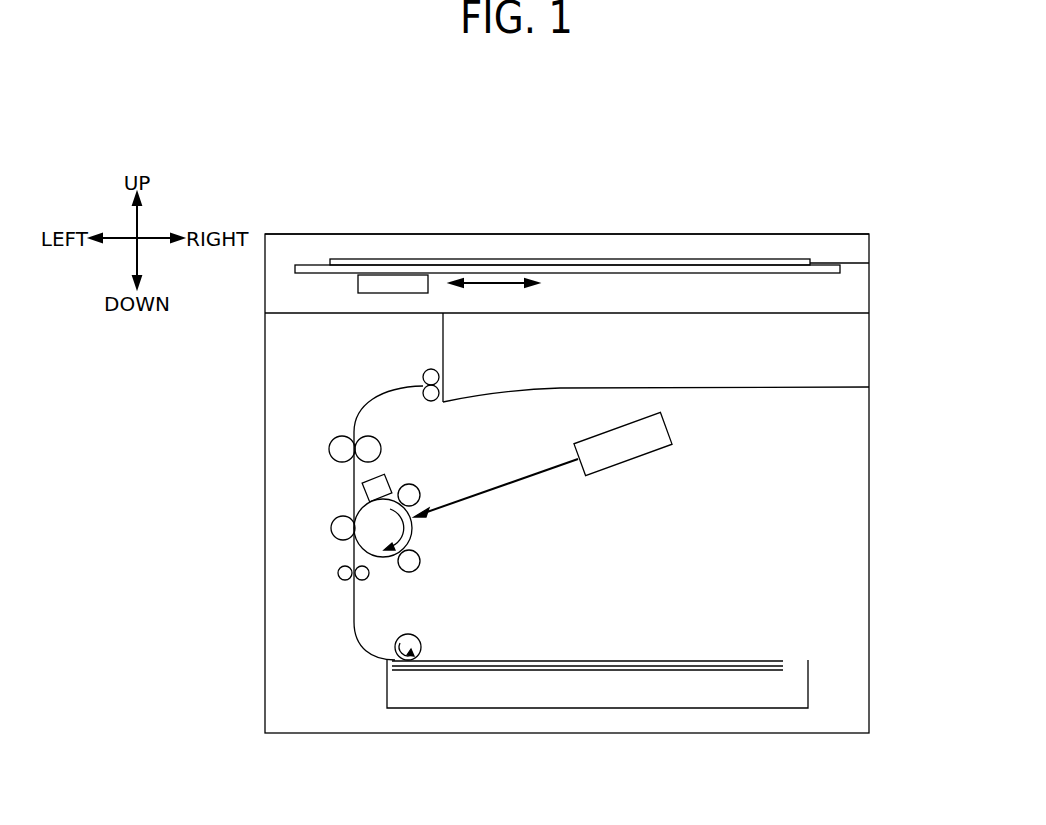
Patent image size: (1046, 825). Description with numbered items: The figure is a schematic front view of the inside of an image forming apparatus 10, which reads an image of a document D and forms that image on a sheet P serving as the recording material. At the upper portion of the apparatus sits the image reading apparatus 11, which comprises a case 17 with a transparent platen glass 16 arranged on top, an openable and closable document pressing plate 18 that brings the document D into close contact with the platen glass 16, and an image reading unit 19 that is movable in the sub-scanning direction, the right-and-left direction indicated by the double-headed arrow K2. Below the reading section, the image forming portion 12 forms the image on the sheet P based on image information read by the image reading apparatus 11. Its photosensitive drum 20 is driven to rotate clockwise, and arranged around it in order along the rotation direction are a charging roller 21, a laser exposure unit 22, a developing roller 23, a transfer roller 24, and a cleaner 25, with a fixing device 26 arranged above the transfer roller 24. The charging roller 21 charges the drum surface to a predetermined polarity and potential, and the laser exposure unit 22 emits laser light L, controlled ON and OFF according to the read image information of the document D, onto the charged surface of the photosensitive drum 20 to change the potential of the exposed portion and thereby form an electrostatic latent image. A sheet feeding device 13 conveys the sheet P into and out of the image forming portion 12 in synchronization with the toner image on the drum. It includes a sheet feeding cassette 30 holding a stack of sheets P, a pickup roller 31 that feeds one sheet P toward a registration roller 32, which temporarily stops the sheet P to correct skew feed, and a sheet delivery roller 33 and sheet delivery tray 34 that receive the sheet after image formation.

The image forming apparatus 10 is at (592, 200).
The image reading apparatus 11 is at (890, 282).
The image forming portion 12 is at (432, 536).
The sheet feeding device 13 is at (335, 614).
The platen glass 16 is at (742, 274).
The case 17 is at (855, 297).
The document pressing plate 18 is at (786, 234).
The image reading unit 19 is at (400, 290).
The photosensitive drum 20 is at (356, 508).
The charging roller 21 is at (418, 486).
The laser exposure unit 22 is at (672, 428).
The developing roller 23 is at (418, 568).
The transfer roller 24 is at (331, 528).
The cleaner 25 is at (392, 478).
The fixing device 26 is at (330, 445).
The sheet feeding cassette 30 is at (600, 708).
The pickup roller 31 is at (421, 645).
The registration roller 32 is at (338, 573).
The sheet delivery roller 33 is at (422, 374).
The sheet delivery tray 34 is at (560, 387).
The document D is at (636, 259).
The sheet P is at (593, 660).
The laser light L is at (525, 480).
The sub-scanning direction K2 is at (494, 294).